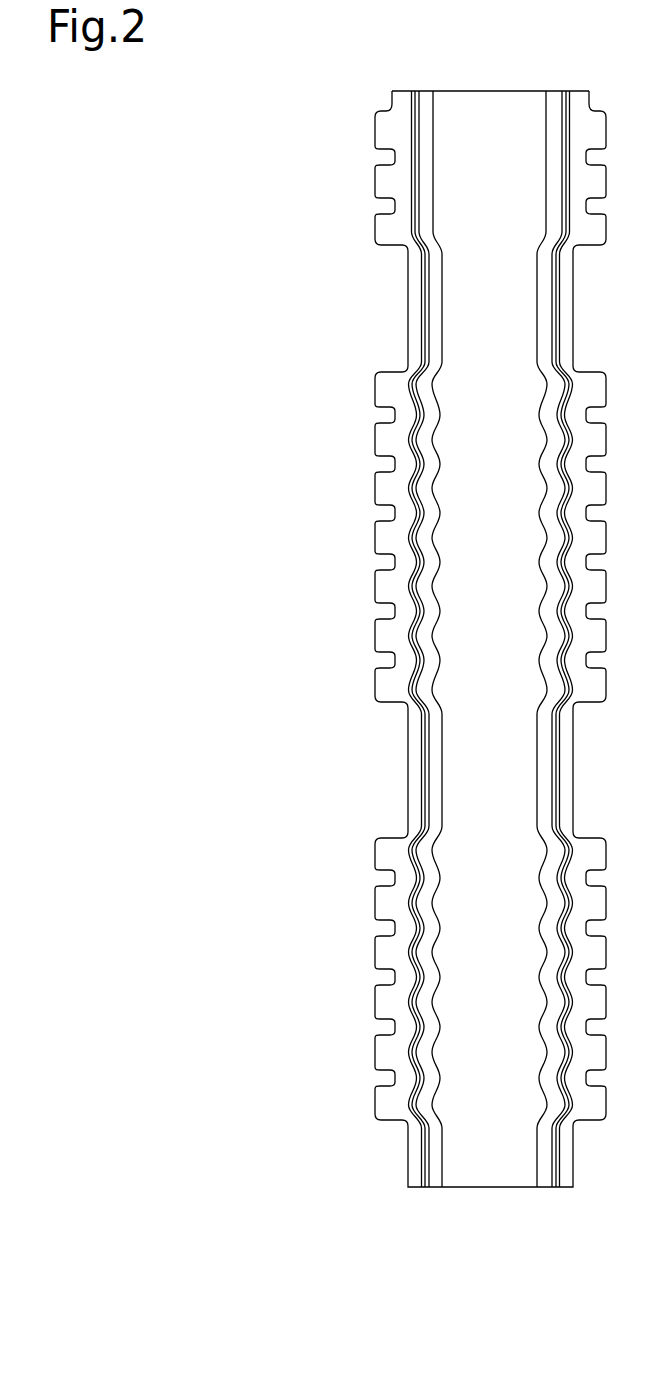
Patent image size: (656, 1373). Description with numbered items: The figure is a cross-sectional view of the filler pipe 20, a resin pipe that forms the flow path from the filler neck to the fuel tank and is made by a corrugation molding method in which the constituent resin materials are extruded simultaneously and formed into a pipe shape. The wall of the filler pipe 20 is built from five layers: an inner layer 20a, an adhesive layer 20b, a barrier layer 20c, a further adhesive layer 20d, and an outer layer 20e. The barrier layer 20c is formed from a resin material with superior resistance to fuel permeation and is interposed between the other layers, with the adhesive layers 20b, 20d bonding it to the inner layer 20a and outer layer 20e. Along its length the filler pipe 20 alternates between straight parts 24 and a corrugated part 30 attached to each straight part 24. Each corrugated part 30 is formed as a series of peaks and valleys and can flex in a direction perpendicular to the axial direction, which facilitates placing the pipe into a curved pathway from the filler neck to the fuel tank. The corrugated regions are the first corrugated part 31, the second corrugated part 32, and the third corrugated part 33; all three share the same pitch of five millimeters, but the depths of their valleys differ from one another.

The filler pipe 20 is at (414, 720).
The inner layer 20a is at (489, 682).
The adhesive layer 20b is at (427, 1188).
The barrier layer 20c is at (423, 1188).
The adhesive layer 20d is at (419, 1187).
The outer layer 20e is at (412, 1175).
The straight part 24 is at (407, 307).
The corrugated part 30 is at (365, 608).
The first corrugated part 31 is at (373, 182).
The second corrugated part 32 is at (365, 752).
The third corrugated part 33 is at (375, 1007).